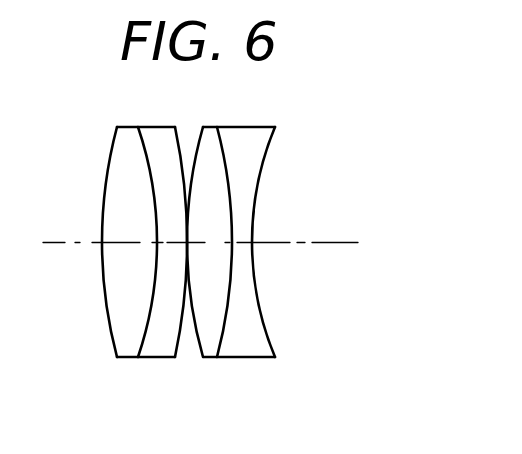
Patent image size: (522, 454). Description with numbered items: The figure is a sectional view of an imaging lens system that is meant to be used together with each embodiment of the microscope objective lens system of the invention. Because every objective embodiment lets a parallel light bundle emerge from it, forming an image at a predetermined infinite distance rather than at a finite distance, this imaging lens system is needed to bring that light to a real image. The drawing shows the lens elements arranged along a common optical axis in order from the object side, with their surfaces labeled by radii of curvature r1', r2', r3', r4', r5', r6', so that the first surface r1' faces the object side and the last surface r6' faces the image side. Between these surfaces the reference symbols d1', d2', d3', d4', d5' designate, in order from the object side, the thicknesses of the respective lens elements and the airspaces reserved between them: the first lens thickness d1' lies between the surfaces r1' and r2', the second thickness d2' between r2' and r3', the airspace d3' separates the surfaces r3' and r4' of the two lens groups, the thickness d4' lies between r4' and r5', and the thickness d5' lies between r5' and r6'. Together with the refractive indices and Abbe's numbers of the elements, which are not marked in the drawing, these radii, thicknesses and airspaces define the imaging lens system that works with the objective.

The radius of curvature of first surface r1' is at (107, 215).
The radius of curvature of second surface r2' is at (144, 215).
The radius of curvature of third surface r3' is at (183, 215).
The radius of curvature of fourth surface r4' is at (214, 215).
The radius of curvature of fifth surface r5' is at (253, 215).
The radius of curvature of sixth surface r6' is at (287, 215).
The first lens thickness d1' is at (102, 328).
The second lens thickness d2' is at (146, 328).
The airspace between lens groups d3' is at (189, 328).
The third lens thickness d4' is at (232, 328).
The fourth lens thickness d5' is at (283, 328).